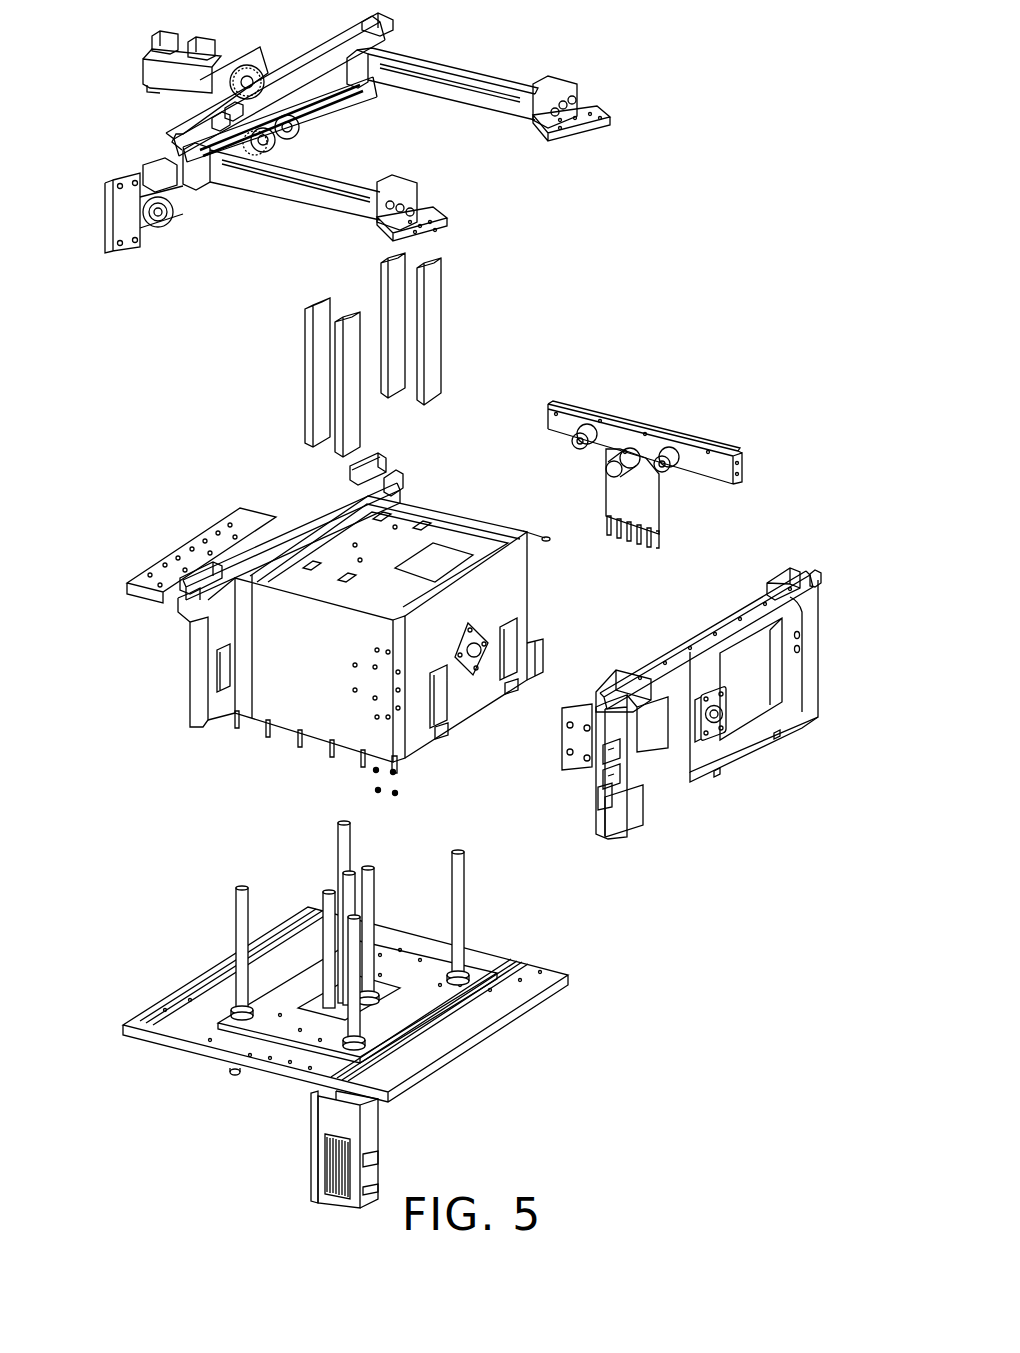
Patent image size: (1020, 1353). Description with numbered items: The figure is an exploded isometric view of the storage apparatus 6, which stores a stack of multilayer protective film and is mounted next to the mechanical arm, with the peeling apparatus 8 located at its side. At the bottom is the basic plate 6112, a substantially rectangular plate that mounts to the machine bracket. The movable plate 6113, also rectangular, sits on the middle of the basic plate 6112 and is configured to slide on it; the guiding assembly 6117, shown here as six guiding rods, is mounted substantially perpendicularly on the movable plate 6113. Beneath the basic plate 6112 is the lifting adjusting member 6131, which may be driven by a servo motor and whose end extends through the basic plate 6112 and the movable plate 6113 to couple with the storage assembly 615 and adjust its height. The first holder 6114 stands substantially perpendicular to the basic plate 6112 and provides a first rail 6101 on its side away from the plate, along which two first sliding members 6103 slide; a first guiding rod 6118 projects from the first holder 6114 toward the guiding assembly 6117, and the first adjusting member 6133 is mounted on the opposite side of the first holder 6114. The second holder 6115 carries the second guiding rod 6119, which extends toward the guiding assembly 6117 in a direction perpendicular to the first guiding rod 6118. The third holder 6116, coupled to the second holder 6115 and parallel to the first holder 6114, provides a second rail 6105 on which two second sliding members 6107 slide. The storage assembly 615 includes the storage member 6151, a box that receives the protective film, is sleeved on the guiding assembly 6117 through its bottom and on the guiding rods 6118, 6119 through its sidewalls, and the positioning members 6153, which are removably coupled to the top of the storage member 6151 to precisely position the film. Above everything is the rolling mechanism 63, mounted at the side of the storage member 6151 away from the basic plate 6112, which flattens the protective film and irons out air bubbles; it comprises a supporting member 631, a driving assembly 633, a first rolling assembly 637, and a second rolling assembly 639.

The storage apparatus 6 is at (654, 41).
The rolling mechanism 63 is at (158, 100).
The supporting member 631 is at (328, 66).
The driving assembly 633 is at (222, 63).
The first rolling assembly 637 is at (425, 63).
The second rolling assembly 639 is at (312, 193).
The positioning members 6153 is at (322, 407).
The storage assembly 615 is at (76, 490).
The second rail 6105 is at (357, 467).
The second sliding members 6107 is at (383, 472).
The storage member 6151 is at (273, 645).
The third holder 6116 is at (213, 710).
The second holder 6115 is at (701, 445).
The second guiding rod 6119 is at (585, 449).
The first sliding members 6103 is at (788, 567).
The first rail 6101 is at (755, 598).
The first guiding rod 6118 is at (682, 703).
The first adjusting member 6133 is at (717, 737).
The first holder 6114 is at (696, 777).
The peeling apparatus 8 is at (645, 744).
The guiding assembly 6117 is at (457, 912).
The movable plate 6113 is at (410, 1003).
The basic plate 6112 is at (470, 1025).
The lifting adjusting member 6131 is at (367, 1140).